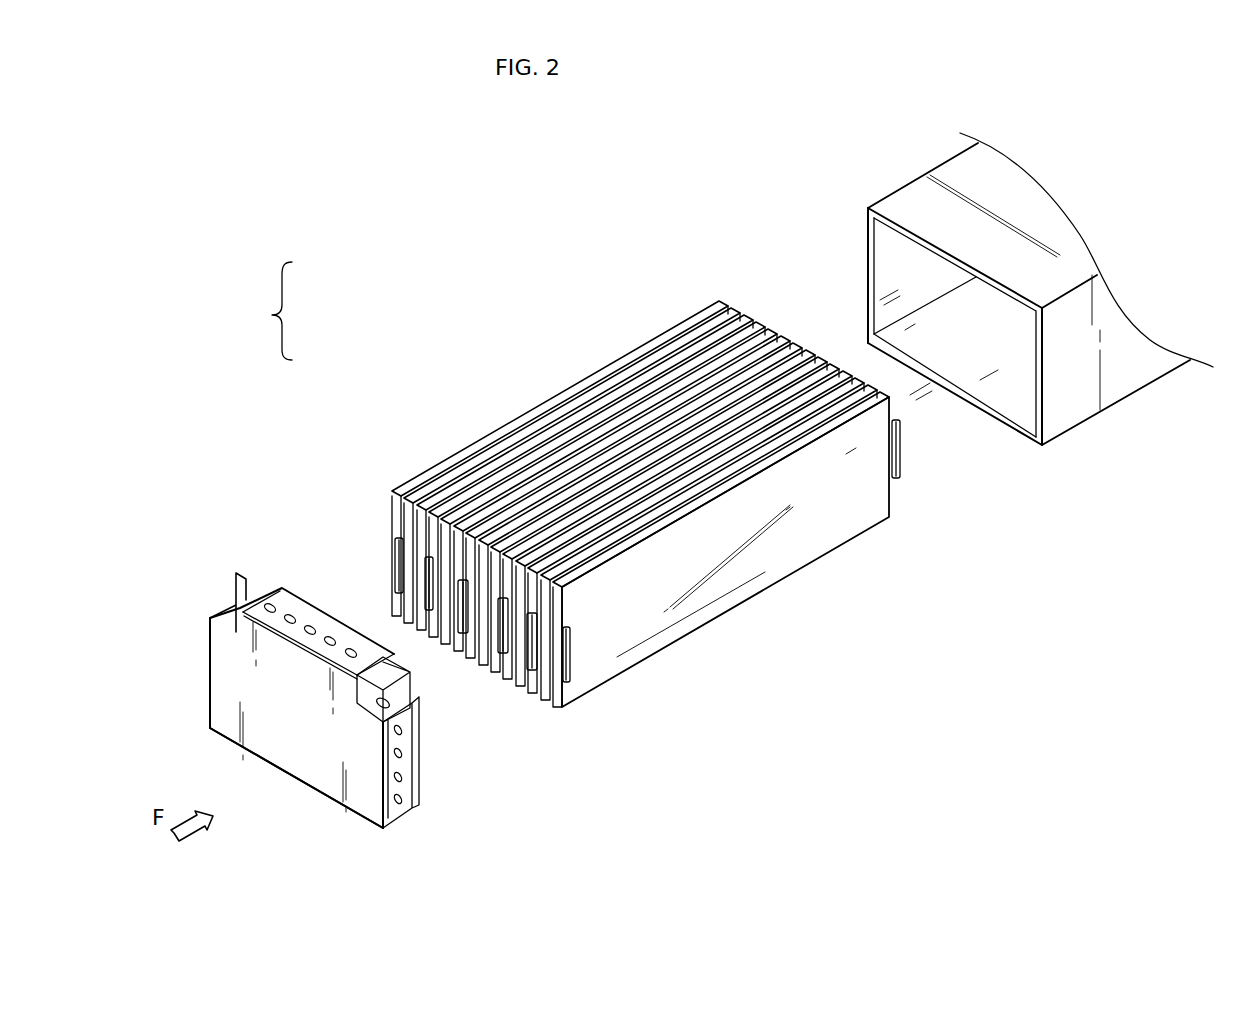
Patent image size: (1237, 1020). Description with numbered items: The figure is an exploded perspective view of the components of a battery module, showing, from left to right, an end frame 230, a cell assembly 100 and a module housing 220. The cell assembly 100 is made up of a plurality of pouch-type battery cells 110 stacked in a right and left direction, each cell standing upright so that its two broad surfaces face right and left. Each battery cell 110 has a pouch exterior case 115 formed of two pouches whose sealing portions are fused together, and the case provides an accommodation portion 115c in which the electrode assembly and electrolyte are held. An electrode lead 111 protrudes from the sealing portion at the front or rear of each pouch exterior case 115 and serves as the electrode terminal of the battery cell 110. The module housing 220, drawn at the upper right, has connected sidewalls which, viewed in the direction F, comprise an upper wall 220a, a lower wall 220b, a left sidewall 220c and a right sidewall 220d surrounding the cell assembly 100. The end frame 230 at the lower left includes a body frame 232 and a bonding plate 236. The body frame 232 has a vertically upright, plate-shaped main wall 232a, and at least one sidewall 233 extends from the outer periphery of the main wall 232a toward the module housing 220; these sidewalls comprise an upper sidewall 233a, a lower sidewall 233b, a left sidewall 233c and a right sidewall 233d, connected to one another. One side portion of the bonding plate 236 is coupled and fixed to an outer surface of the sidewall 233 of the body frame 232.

The cell assembly 100 is at (640, 500).
The battery cell 110 is at (402, 622).
The electrode lead 111 is at (395, 558).
The pouch exterior case 115 is at (571, 708).
The accommodation portion 115c is at (722, 598).
The module housing 220 is at (1040, 261).
The upper wall 220a is at (1030, 200).
The lower wall 220b is at (985, 415).
The left sidewall 220c is at (862, 252).
The right sidewall 220d is at (1072, 408).
The end frame 230 is at (276, 582).
The body frame 232 is at (243, 704).
The main wall 232a is at (270, 740).
The sidewall 233 is at (262, 311).
The upper sidewall 233a is at (257, 598).
The lower sidewall 233b is at (302, 821).
The left sidewall 233c is at (176, 660).
The right sidewall 233d is at (437, 757).
The bonding plate 236 is at (302, 613).